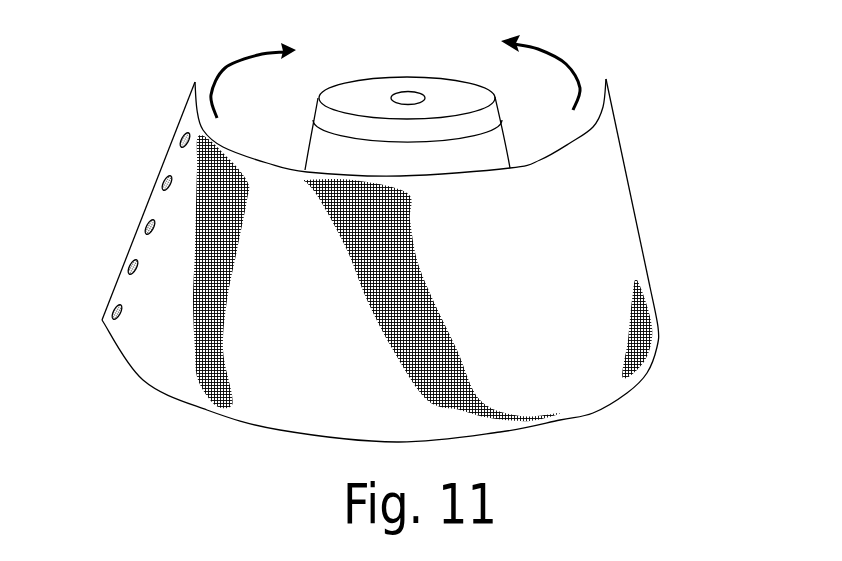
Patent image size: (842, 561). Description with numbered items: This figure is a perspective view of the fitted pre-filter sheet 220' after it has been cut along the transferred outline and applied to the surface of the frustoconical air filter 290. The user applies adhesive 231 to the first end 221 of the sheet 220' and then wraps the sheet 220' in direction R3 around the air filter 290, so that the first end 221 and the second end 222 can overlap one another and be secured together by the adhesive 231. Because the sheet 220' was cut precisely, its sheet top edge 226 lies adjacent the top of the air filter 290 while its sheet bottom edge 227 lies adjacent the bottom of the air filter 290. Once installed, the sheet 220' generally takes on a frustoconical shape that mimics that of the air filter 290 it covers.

The fitted pre-filter sheet 220' is at (397, 265).
The sheet top edge 226 is at (195, 82).
The second end 222 is at (658, 327).
The sheet bottom edge 227 is at (207, 410).
The first end 221 is at (102, 320).
The adhesive 231 is at (157, 230).
The frustoconical air filter 290 is at (407, 93).
The wrapping direction R3 is at (395, 76).